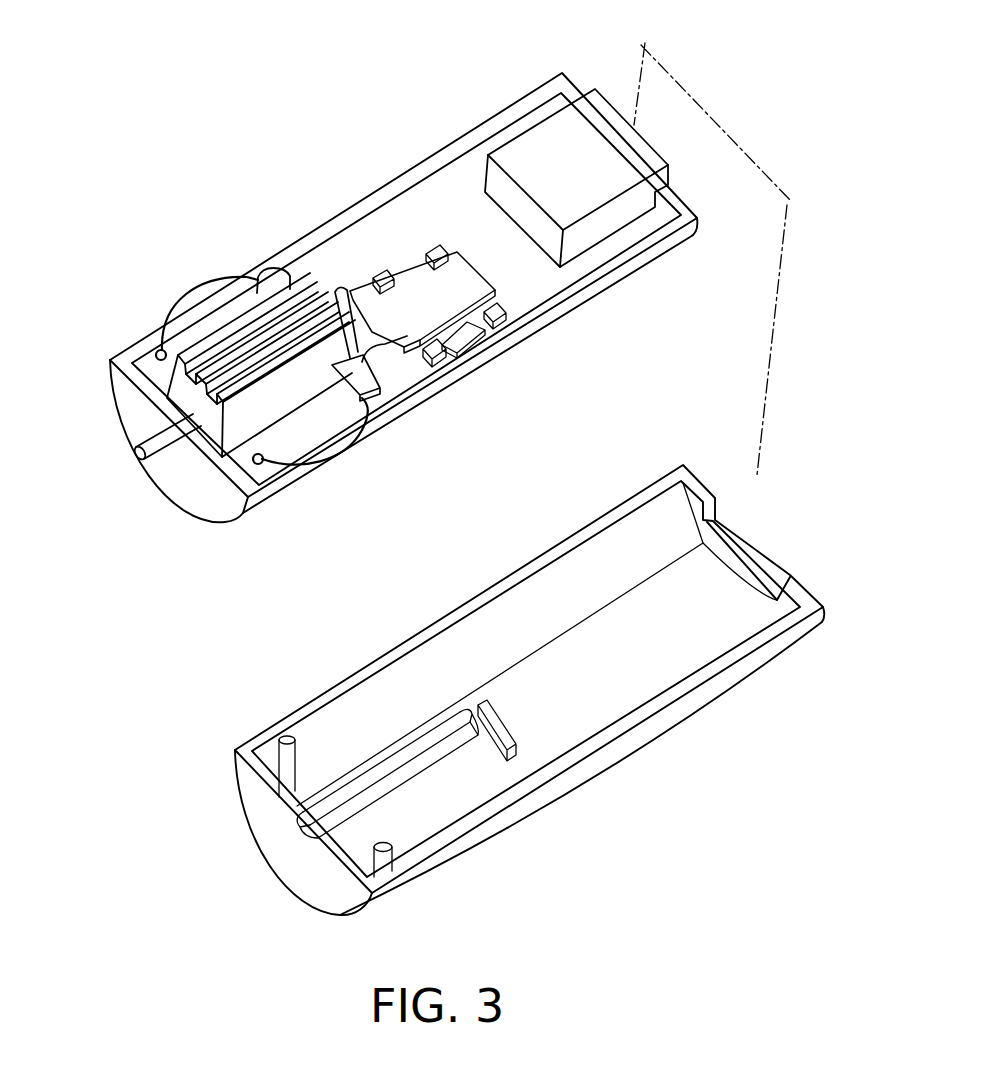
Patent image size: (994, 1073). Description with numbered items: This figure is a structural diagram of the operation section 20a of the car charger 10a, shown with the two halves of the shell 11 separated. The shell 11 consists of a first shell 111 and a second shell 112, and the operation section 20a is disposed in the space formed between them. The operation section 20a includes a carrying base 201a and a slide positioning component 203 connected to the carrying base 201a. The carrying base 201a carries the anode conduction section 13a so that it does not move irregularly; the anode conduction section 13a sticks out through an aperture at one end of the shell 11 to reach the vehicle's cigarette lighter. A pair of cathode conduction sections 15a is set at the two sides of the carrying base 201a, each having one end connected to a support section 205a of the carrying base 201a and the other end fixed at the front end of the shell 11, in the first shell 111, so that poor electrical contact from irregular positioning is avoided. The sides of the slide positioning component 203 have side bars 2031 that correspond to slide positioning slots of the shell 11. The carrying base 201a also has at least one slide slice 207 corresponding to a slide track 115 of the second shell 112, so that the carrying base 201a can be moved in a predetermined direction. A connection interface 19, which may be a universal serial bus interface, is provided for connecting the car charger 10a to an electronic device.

The car charger 10a is at (160, 31).
The shell 11 is at (105, 495).
The first shell 111 is at (623, 270).
The second shell 112 is at (528, 568).
The slide track 115 is at (417, 750).
The anode conduction section 13a is at (165, 443).
The cathode conduction sections 15a is at (163, 325).
The connection interface 19 is at (530, 147).
The operation section 20a is at (453, 72).
The carrying base 201a is at (245, 416).
The slide positioning component 203 is at (470, 292).
The side bars 2031 is at (381, 270).
The support section 205a is at (357, 405).
The slide slice 207 is at (282, 305).